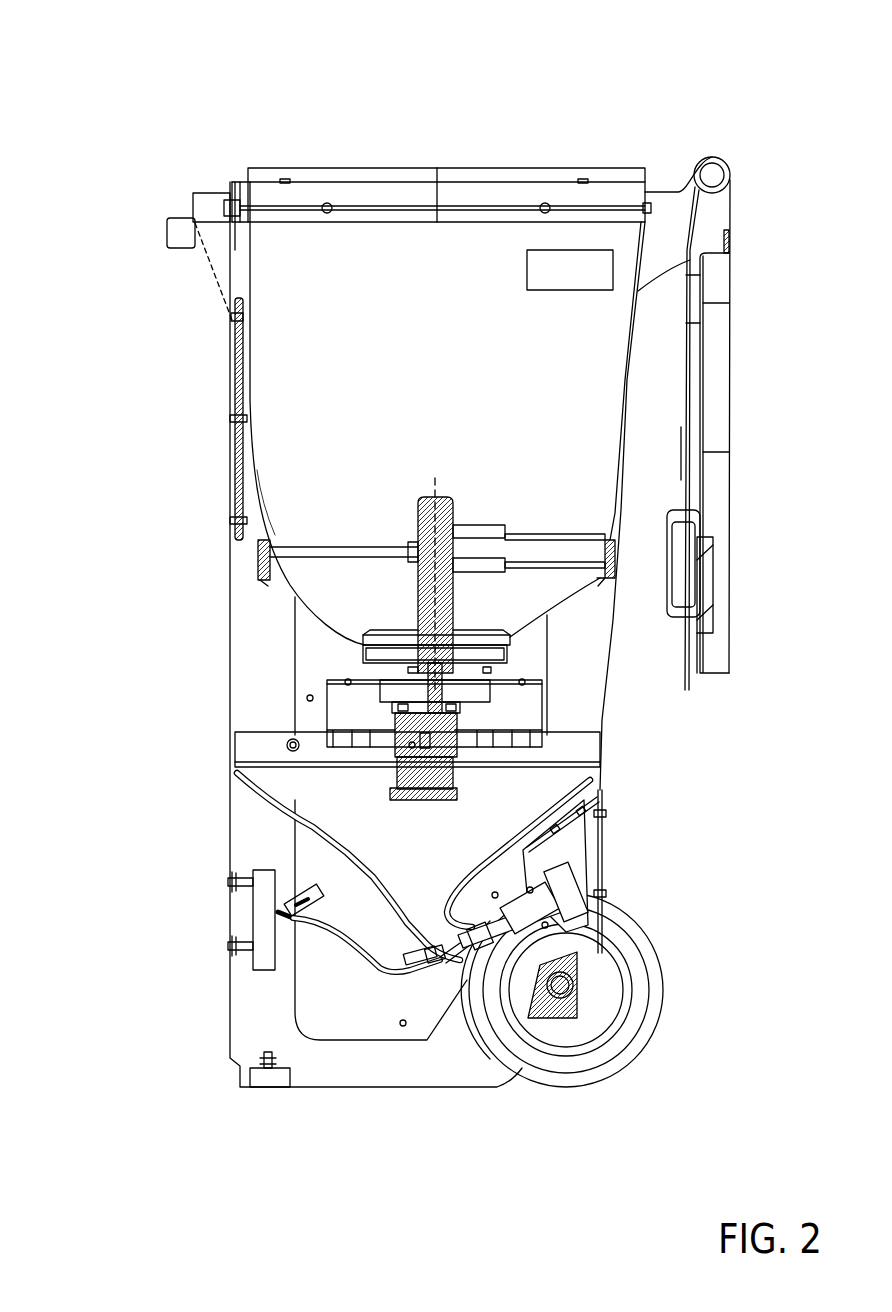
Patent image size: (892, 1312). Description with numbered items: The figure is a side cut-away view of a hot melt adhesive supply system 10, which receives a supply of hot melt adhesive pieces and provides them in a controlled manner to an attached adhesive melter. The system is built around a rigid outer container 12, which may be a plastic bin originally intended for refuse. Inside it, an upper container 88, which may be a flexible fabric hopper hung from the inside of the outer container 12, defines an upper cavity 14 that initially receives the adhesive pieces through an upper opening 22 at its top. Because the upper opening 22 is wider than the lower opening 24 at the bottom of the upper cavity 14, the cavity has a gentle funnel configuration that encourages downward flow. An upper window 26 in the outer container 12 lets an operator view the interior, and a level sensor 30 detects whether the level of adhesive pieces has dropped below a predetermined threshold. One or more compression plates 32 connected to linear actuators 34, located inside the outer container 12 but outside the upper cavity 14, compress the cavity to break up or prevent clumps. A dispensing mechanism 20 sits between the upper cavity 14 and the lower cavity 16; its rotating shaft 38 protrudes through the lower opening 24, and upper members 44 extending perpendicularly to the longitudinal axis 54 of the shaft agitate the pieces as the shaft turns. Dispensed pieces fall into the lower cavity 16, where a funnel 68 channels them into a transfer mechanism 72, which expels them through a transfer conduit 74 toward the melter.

The hot melt adhesive supply system 10 is at (102, 110).
The outer container 12 is at (232, 600).
The upper cavity 14 is at (278, 283).
The lower cavity 16 is at (263, 700).
The dispensing mechanism 20 is at (572, 690).
The upper opening 22 is at (474, 158).
The lower opening 24 is at (378, 623).
The upper window 26 is at (232, 355).
The level sensor 30 is at (526, 268).
The compression plates 32 is at (263, 558).
The linear actuators 34 is at (557, 550).
The rotating shaft 38 is at (420, 534).
The upper members 44 is at (485, 563).
The longitudinal axis 54 is at (434, 570).
The funnel 68 is at (312, 826).
The transfer mechanism 72 is at (563, 880).
The transfer conduit 74 is at (430, 990).
The upper container 88 is at (258, 495).